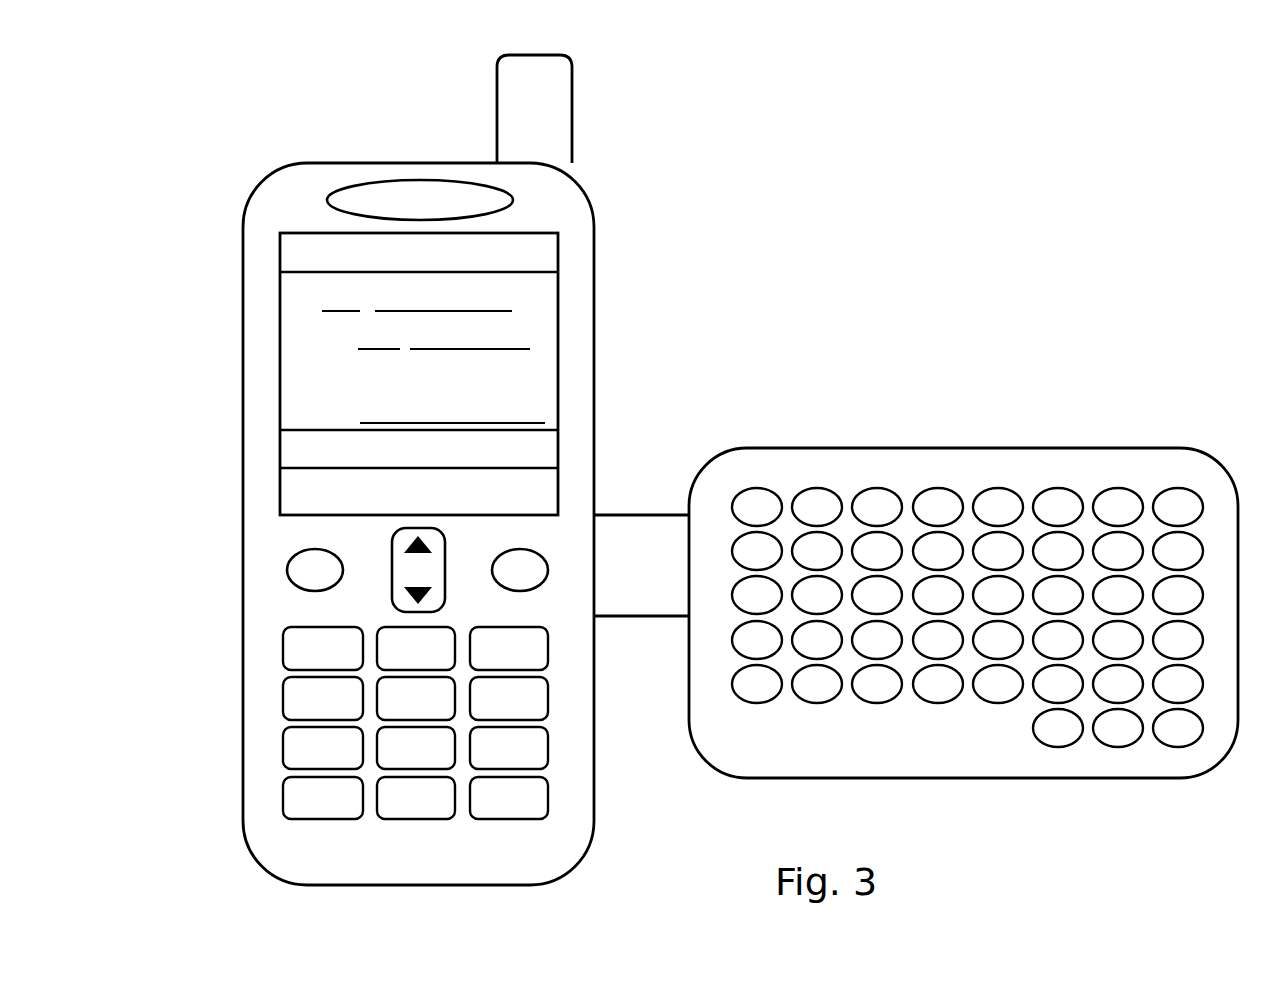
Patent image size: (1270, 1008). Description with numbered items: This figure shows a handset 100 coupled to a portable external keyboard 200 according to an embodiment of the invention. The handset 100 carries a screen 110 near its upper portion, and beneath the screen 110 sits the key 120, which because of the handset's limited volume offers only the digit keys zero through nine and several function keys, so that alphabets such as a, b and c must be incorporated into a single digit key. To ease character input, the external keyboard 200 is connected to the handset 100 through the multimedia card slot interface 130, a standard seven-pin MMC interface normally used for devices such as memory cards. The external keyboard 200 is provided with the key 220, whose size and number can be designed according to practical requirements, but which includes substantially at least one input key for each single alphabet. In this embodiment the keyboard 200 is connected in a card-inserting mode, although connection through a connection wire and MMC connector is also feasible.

The handset 100 is at (376, 150).
The screen 110 is at (545, 337).
The key 120 is at (548, 690).
The multimedia card slot interface 130 is at (658, 515).
The external keyboard 200 is at (1133, 437).
The key 220 is at (957, 488).